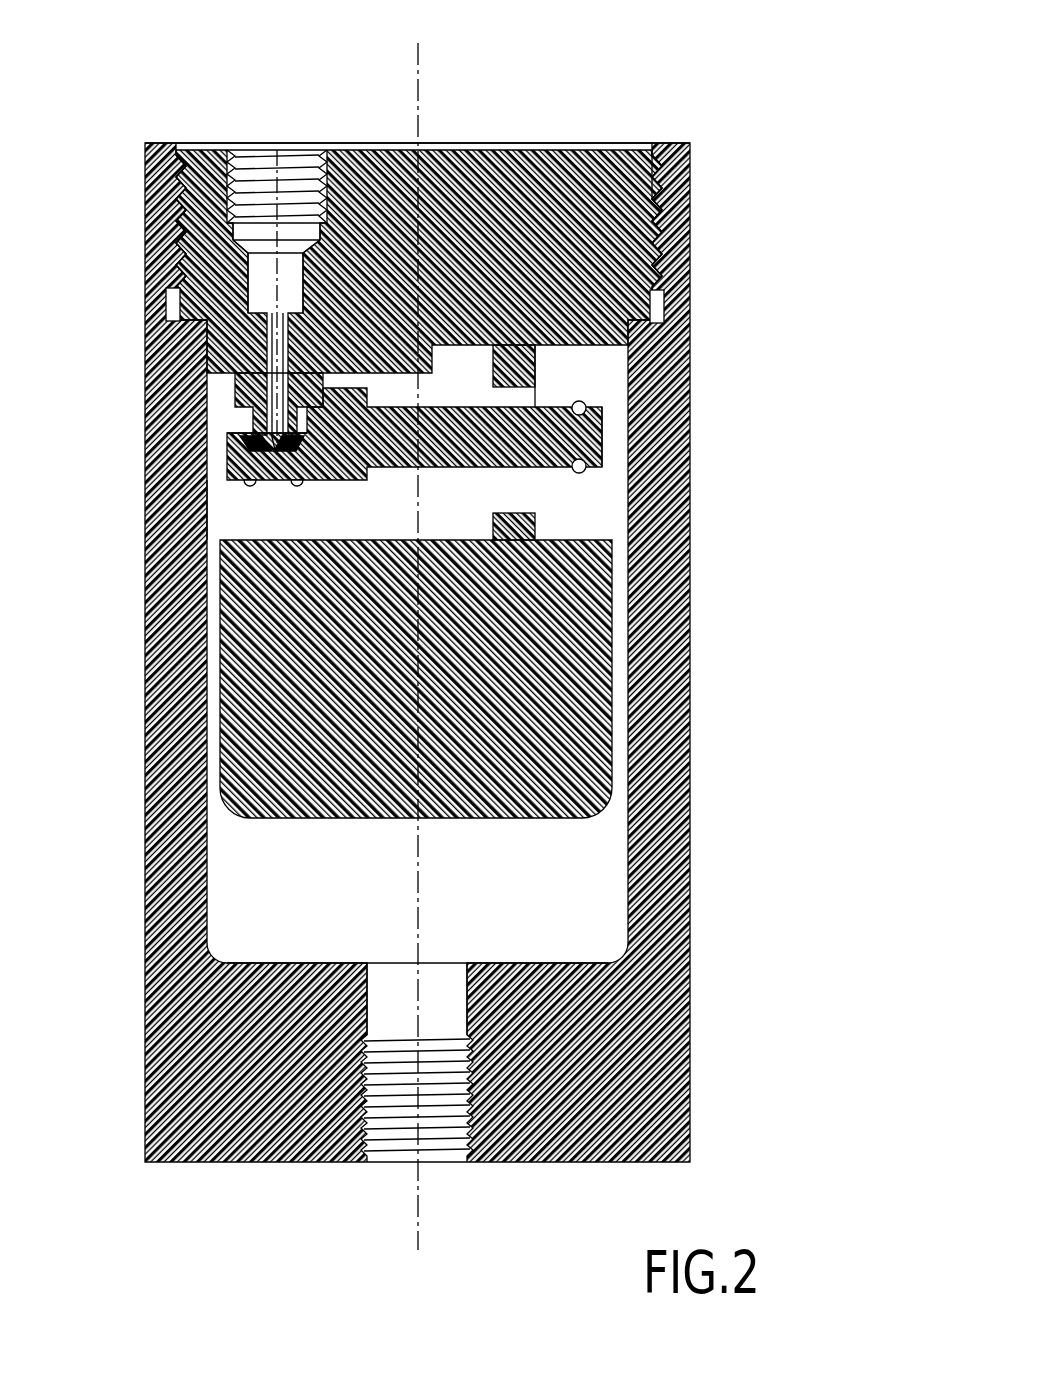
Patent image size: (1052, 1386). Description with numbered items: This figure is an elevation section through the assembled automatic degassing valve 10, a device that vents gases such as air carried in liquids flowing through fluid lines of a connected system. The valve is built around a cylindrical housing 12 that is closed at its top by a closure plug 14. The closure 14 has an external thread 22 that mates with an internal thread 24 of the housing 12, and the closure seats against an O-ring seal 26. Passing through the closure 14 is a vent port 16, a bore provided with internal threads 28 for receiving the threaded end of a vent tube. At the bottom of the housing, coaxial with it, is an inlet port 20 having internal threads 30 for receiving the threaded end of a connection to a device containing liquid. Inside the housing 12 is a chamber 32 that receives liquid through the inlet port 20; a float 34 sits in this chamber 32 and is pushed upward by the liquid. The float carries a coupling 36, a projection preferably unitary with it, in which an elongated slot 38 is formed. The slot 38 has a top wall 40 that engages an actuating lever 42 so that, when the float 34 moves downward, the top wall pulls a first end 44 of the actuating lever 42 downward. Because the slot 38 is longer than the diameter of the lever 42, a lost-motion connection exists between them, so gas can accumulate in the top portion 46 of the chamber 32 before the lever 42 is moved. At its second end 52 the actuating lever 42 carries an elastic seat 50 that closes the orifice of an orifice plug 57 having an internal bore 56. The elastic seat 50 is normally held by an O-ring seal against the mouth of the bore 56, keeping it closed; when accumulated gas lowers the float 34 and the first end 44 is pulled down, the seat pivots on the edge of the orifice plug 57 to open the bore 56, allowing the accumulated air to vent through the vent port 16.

The automatic degassing valve 10 is at (754, 100).
The housing 12 is at (682, 672).
The closure plug 14 is at (490, 175).
The vent port 16 is at (278, 165).
The inlet port 20 is at (437, 1130).
The external thread 22 is at (650, 245).
The internal thread 24 is at (655, 190).
The O-ring seal 26 is at (648, 318).
The internal threads 28 is at (225, 175).
The internal threads 30 is at (355, 1135).
The chamber 32 is at (585, 893).
The float 34 is at (590, 632).
The coupling 36 is at (537, 367).
The slot 38 is at (520, 488).
The top wall 40 is at (515, 400).
The actuating lever 42 is at (440, 478).
The first end 44 is at (604, 437).
The top portion 46 is at (248, 510).
The elastic seat 50 is at (263, 440).
The second end 52 is at (235, 470).
The internal bore 56 is at (242, 368).
The orifice plug 57 is at (270, 358).